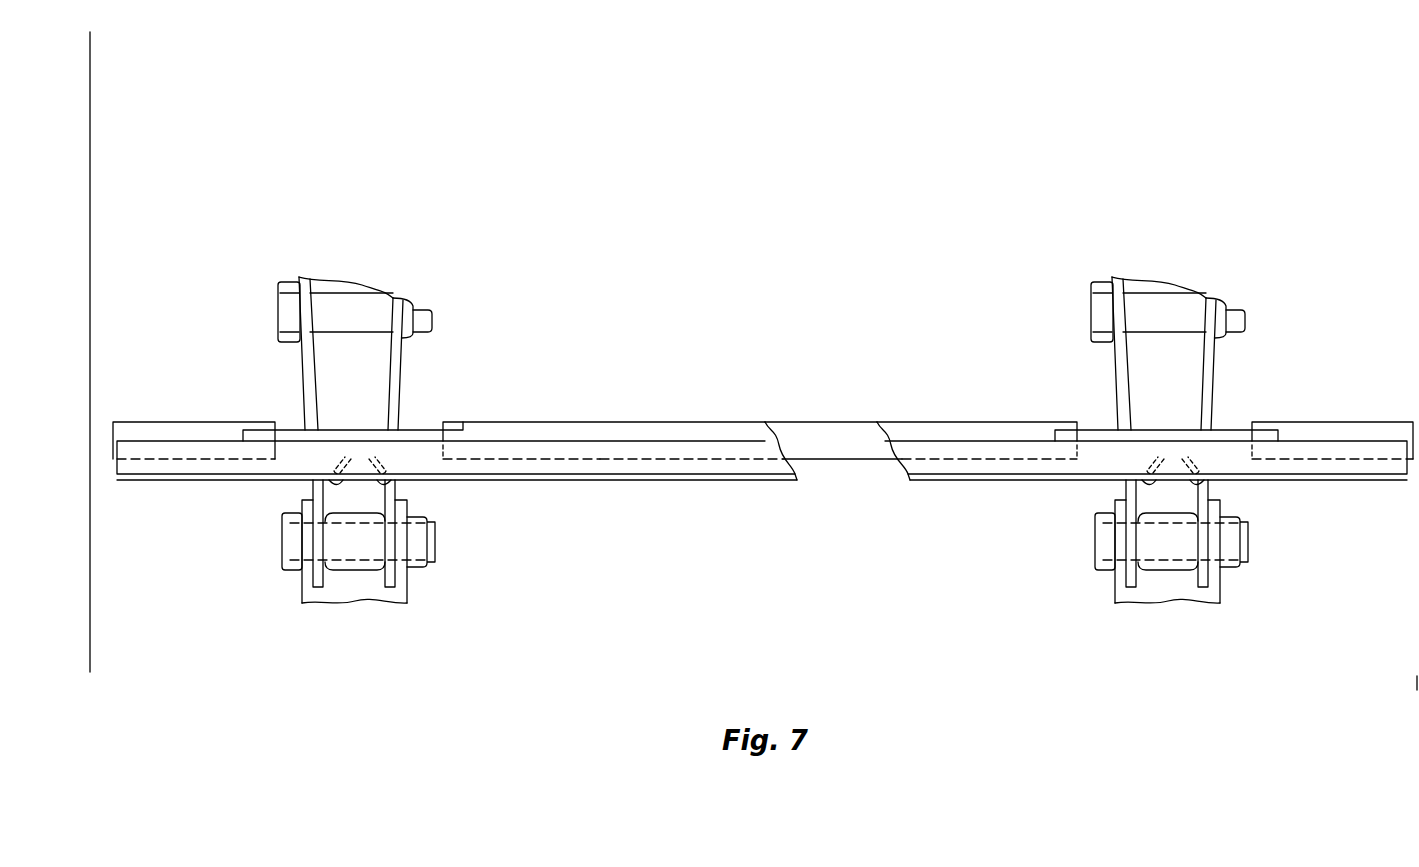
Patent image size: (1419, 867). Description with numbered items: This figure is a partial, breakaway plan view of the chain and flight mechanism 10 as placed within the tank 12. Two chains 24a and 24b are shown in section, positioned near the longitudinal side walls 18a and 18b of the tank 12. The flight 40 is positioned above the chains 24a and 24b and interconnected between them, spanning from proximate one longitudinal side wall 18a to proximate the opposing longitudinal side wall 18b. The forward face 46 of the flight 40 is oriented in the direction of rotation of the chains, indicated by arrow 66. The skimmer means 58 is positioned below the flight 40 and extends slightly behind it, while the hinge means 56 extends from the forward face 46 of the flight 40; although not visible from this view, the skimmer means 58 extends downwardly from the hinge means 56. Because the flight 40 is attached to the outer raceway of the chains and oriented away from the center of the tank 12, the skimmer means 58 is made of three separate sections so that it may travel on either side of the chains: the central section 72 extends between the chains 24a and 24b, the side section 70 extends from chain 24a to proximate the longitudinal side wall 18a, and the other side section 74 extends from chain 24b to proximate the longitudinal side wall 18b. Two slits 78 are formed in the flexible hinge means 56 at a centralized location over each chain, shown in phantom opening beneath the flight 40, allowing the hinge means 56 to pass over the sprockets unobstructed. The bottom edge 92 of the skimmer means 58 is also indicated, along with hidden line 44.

The chain and flight mechanism 10 is at (569, 400).
The tank 12 is at (784, 106).
The longitudinal side wall 18a is at (100, 70).
The longitudinal side wall 18b is at (1408, 683).
The chain 24a is at (418, 361).
The chain 24b is at (1096, 354).
The flight 40 is at (718, 465).
The hidden plate edge 44 is at (664, 462).
The forward face 46 is at (990, 488).
The hinge means 56 is at (235, 482).
The skimmer means 58 is at (823, 440).
The arrow 66 is at (145, 700).
The side section 70 is at (184, 416).
The central section 72 is at (650, 412).
The side section 74 is at (1343, 412).
The slit 78 is at (363, 460).
The bottom edge 92 is at (548, 470).